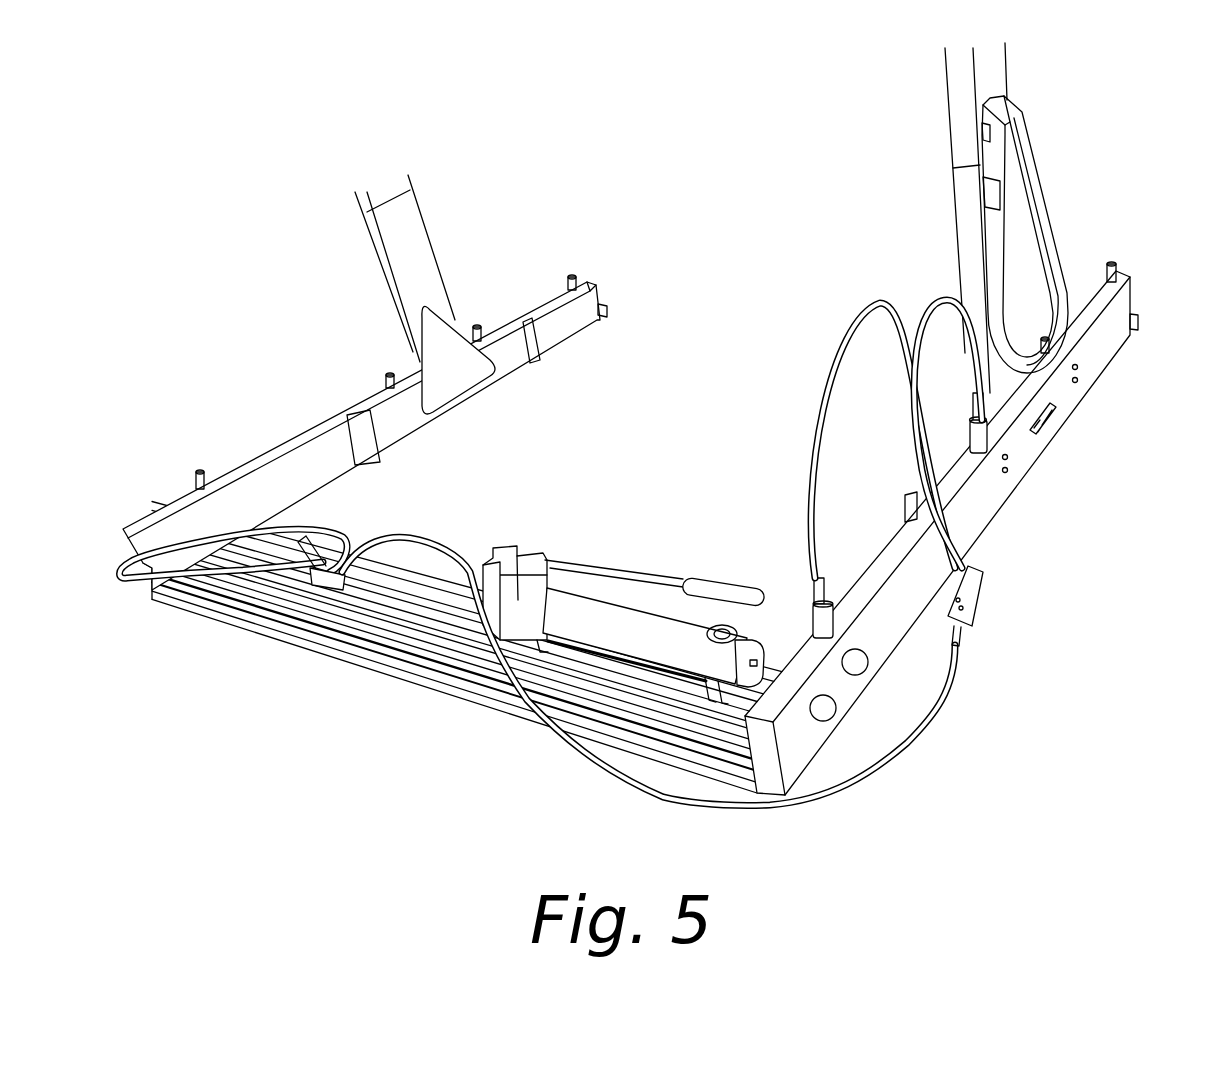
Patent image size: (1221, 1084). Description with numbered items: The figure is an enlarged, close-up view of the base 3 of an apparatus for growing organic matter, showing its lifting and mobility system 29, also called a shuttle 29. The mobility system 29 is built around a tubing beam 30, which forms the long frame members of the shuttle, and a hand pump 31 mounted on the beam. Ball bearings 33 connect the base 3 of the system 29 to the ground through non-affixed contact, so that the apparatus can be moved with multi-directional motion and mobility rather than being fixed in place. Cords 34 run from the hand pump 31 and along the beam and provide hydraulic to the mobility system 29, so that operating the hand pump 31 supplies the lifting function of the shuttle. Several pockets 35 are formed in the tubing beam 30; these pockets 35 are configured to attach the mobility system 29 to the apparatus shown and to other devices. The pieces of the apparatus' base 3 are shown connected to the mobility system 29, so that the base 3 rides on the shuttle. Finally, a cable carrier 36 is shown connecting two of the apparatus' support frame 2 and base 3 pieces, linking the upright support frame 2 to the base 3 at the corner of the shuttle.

The support frame 2 is at (998, 63).
The base 3 is at (480, 271).
The lifting and mobility system 29 is at (654, 424).
The tubing beam 30 is at (257, 453).
The hand pump 31 is at (658, 527).
The ball bearings 33 is at (572, 276).
The cords 34 is at (866, 300).
The pockets 35 is at (870, 667).
The cable carrier 36 is at (1043, 174).